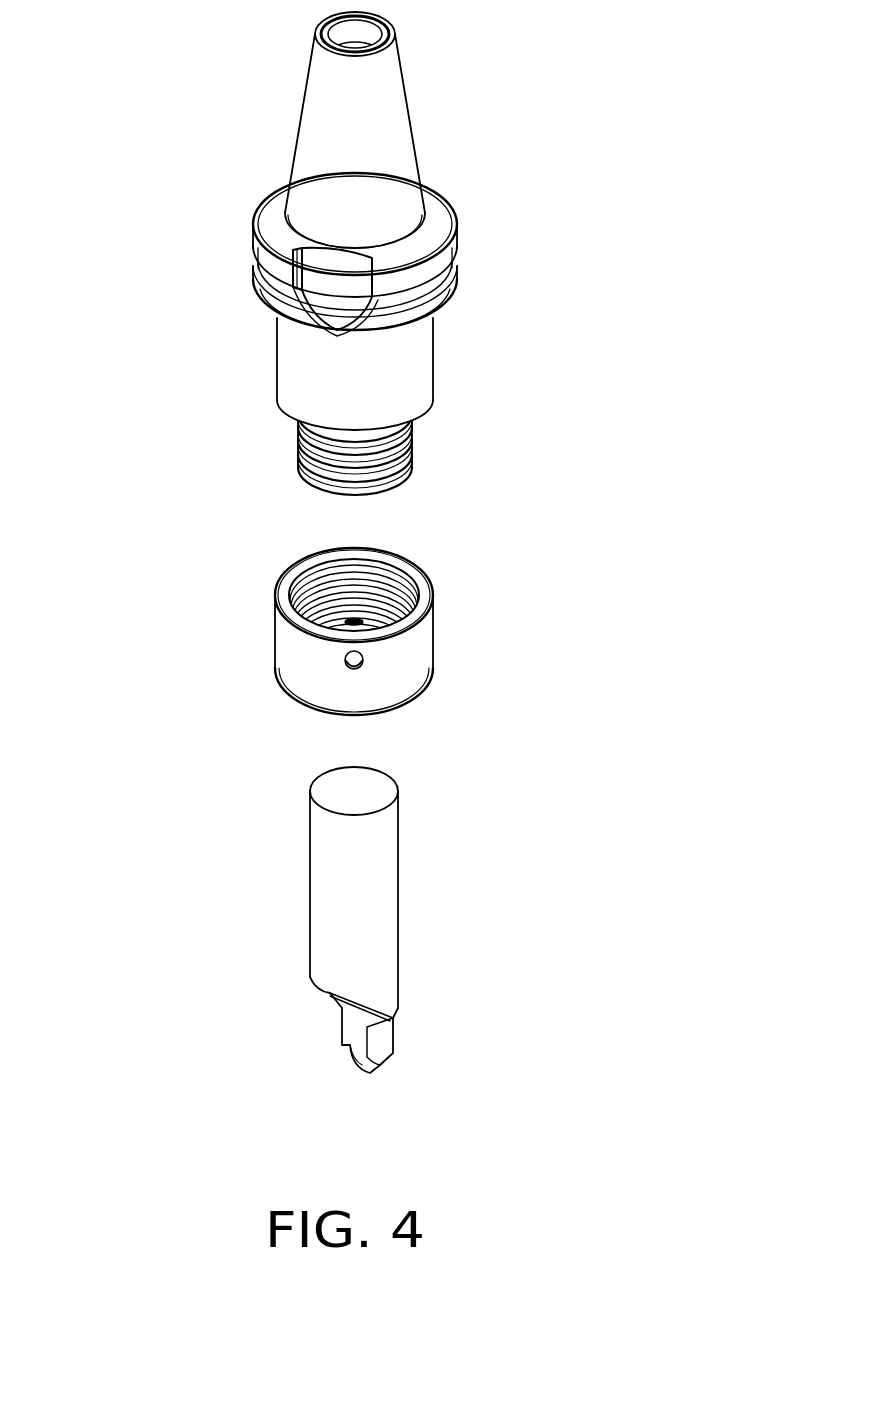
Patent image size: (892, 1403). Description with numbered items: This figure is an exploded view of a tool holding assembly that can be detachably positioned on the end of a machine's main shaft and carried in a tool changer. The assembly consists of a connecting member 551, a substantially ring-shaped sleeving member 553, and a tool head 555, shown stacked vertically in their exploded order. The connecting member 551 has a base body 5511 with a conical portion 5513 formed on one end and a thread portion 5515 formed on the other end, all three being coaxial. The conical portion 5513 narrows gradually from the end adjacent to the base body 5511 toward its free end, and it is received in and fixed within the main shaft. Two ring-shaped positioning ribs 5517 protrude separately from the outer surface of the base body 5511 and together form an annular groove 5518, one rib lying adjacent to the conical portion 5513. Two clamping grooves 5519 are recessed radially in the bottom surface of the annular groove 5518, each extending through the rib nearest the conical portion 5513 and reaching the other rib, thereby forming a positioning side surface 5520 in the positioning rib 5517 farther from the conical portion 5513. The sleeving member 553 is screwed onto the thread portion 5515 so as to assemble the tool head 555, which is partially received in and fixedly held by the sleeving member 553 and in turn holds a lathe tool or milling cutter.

The connecting member 551 is at (488, 193).
The conical portion 5513 is at (323, 180).
The clamping groove 5519 is at (332, 272).
The positioning side surface 5520 is at (327, 322).
The annular groove 5518 is at (400, 297).
The positioning rib 5517 is at (413, 328).
The base body 5511 is at (405, 390).
The thread portion 5515 is at (405, 480).
The sleeving member 553 is at (400, 658).
The tool head 555 is at (373, 902).